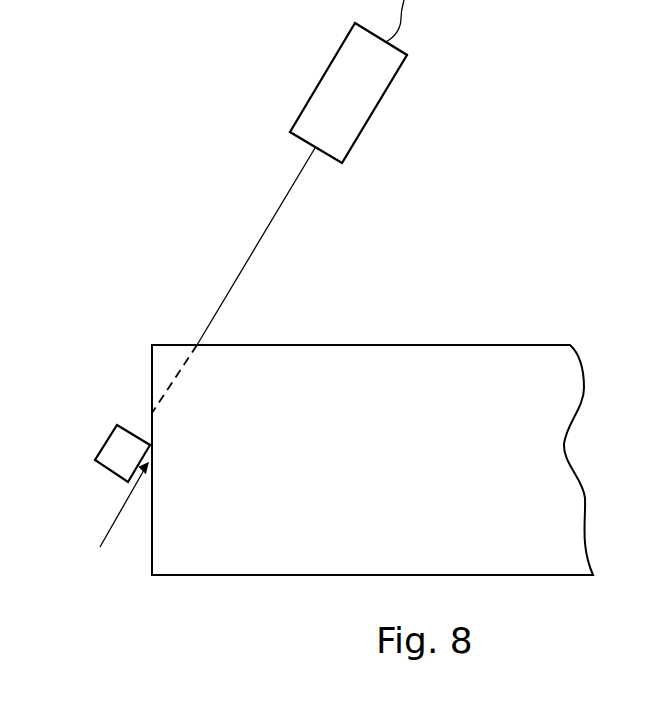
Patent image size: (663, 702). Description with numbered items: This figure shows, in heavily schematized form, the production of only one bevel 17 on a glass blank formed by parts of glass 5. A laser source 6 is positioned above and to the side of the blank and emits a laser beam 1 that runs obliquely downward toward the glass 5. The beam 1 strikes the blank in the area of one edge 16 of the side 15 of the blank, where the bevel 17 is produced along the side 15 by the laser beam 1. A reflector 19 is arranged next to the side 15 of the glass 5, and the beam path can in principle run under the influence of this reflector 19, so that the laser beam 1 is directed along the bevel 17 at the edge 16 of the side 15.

The laser beam 1 is at (240, 273).
The glass 5 is at (483, 402).
The laser source 6 is at (342, 97).
The side 15 is at (110, 520).
The edge 16 is at (152, 345).
The bevel 17 is at (167, 387).
The reflector 19 is at (105, 442).